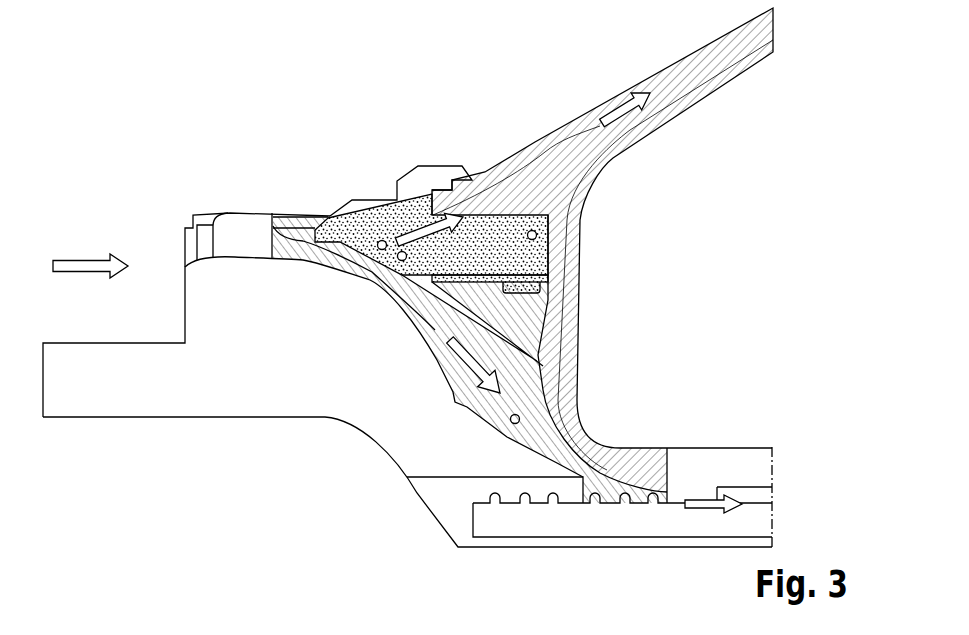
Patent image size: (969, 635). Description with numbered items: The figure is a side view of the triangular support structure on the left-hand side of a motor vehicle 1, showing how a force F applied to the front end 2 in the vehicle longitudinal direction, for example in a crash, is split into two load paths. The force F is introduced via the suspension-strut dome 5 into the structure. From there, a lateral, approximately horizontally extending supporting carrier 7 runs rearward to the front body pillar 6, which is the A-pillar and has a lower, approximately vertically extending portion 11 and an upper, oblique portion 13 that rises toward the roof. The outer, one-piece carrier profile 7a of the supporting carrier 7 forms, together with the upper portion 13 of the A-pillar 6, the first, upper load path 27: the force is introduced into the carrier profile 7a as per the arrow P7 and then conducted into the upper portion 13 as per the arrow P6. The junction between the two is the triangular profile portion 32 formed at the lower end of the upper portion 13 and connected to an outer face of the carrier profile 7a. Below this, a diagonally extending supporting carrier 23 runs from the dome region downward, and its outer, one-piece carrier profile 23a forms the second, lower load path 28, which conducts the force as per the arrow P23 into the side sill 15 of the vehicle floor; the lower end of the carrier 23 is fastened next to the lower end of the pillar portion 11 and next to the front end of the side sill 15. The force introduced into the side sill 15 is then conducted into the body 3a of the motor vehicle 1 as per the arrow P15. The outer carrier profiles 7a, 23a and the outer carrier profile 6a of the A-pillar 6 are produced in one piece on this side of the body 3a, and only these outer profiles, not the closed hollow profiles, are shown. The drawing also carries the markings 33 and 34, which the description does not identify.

The motor vehicle 1 is at (257, 207).
The front end 2 is at (257, 207).
The suspension-strut dome 5 is at (241, 227).
The supporting carrier 7 is at (431, 199).
The outer carrier profile 7a is at (431, 199).
The first, upper load path 27 is at (431, 199).
The arrow P7 is at (431, 199).
The triangular profile portion 32 is at (412, 212).
The front body pillar 6 is at (602, 250).
The upper portion of the front body pillar 13 is at (602, 114).
The arrow P6 is at (618, 107).
The bore in web 33 is at (538, 234).
The outer carrier profile 6a is at (625, 353).
The lower portion of the front body pillar 11 is at (568, 299).
The body 3a is at (624, 468).
The side sill 15 is at (624, 468).
The arrow P15 is at (698, 497).
The diagonally extending supporting carrier 23 is at (407, 382).
The outer carrier profile 23a is at (407, 382).
The second, lower load path 28 is at (407, 382).
The arrow P23 is at (442, 365).
The bore in hub 34 is at (510, 418).
The force F is at (78, 260).